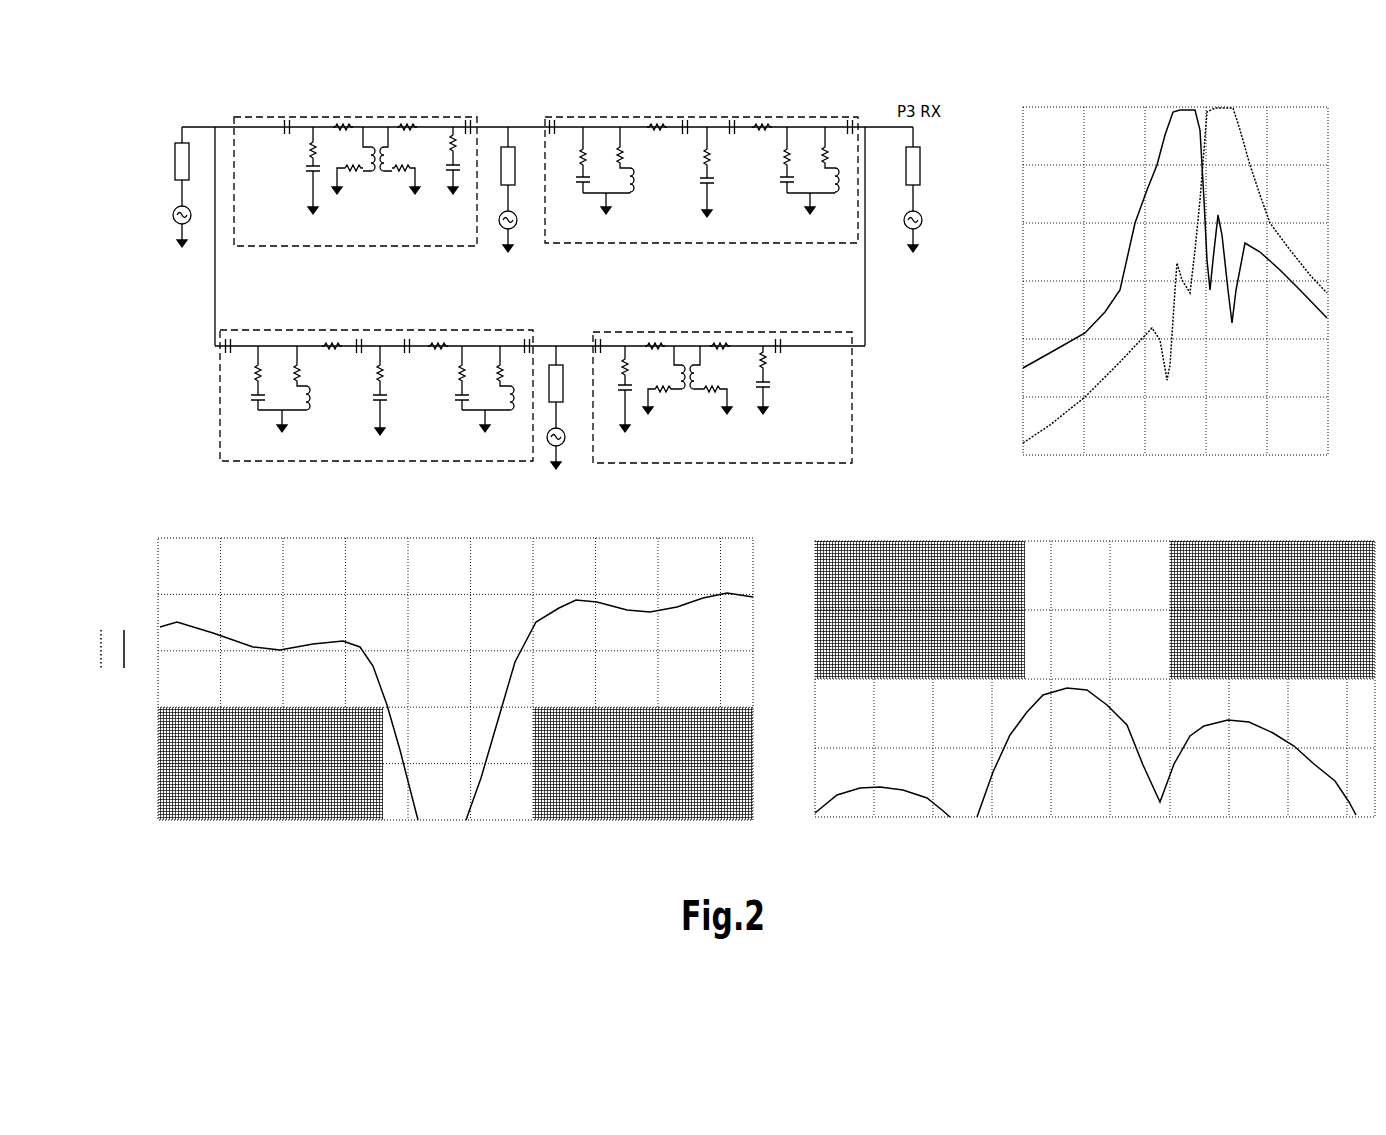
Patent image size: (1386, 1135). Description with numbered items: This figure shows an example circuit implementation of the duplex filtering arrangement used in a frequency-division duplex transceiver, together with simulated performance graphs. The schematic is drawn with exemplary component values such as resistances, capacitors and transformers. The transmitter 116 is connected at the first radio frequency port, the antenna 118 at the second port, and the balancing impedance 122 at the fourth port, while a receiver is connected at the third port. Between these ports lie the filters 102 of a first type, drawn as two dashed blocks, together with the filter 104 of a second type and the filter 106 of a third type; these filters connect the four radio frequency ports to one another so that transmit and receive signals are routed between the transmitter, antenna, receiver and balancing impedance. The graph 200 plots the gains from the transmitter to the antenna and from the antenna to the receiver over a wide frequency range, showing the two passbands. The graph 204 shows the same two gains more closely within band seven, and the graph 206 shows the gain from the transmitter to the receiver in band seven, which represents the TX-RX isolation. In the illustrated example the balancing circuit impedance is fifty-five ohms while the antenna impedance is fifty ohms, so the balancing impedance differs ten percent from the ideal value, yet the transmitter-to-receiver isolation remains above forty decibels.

The filter of a first type 102 is at (380, 117).
The filter of a second type 104 is at (718, 114).
The filter of a third type 106 is at (220, 412).
The transmitter 116 is at (155, 138).
The antenna 118 is at (515, 95).
The balancing impedance 122 is at (598, 312).
The graph 200 is at (1112, 107).
The graph 204 is at (378, 878).
The graph 206 is at (1022, 880).